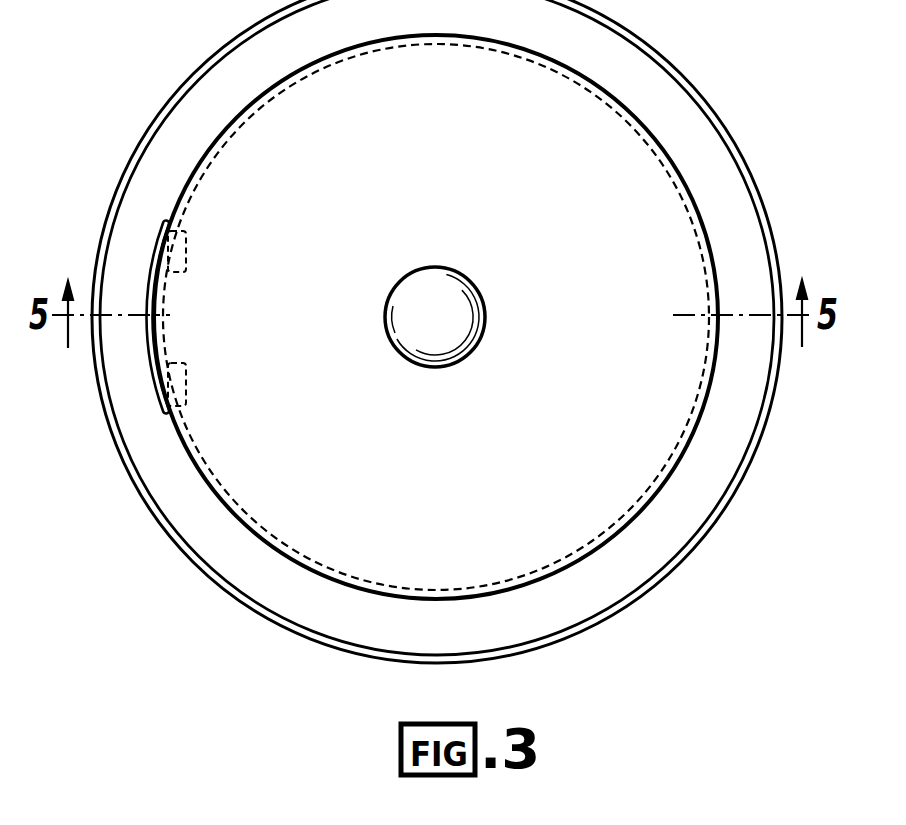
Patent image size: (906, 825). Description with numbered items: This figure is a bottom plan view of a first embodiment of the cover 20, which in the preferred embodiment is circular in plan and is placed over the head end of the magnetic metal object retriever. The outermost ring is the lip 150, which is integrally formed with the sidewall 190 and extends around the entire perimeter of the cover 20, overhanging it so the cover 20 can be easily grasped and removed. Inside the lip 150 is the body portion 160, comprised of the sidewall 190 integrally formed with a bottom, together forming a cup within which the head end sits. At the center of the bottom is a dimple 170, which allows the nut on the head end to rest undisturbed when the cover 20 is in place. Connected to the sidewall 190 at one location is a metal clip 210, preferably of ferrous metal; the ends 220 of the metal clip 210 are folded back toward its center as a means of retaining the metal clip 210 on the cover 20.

The cover 20 is at (710, 71).
The lip 150 is at (768, 202).
The body portion 160 is at (582, 463).
The dimple 170 is at (486, 320).
The sidewall 190 is at (702, 415).
The metal clip 210 is at (152, 362).
The ends of the metal clip 220 is at (181, 253).